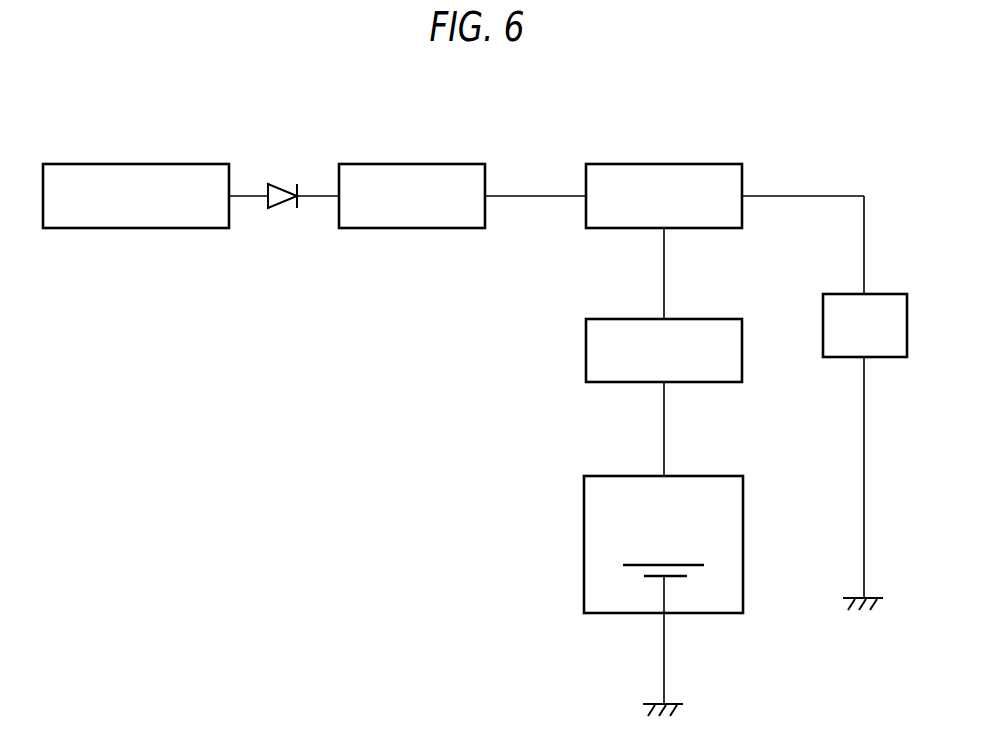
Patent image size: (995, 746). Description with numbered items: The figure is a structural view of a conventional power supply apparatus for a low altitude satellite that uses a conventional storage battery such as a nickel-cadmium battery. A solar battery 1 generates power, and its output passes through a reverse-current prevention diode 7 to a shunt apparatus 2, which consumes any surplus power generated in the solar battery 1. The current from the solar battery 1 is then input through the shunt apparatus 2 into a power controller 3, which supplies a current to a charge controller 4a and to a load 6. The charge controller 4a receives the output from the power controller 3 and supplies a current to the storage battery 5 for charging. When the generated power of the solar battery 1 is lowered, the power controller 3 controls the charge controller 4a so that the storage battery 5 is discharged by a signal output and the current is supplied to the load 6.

The solar battery 1 is at (133, 164).
The reverse-current prevention diode 7 is at (294, 183).
The shunt apparatus 2 is at (409, 164).
The power controller 3 is at (661, 164).
The charge controller 4a is at (586, 352).
The storage battery 5 is at (584, 546).
The load 6 is at (823, 326).